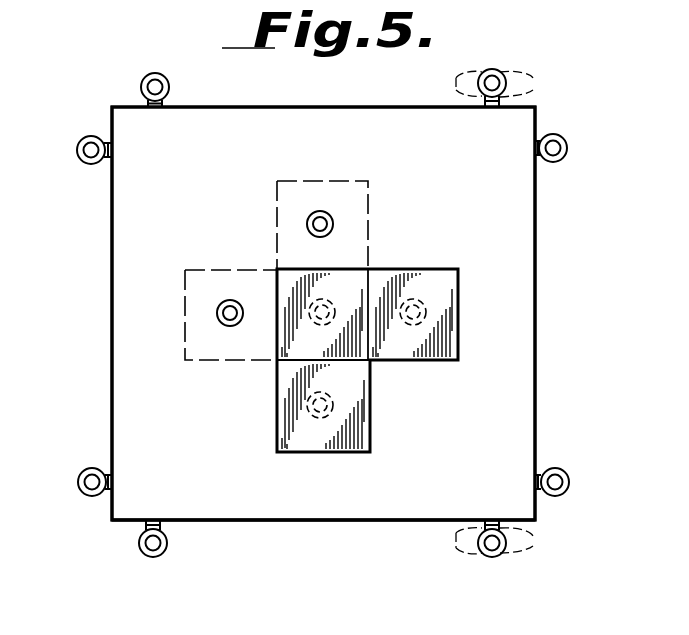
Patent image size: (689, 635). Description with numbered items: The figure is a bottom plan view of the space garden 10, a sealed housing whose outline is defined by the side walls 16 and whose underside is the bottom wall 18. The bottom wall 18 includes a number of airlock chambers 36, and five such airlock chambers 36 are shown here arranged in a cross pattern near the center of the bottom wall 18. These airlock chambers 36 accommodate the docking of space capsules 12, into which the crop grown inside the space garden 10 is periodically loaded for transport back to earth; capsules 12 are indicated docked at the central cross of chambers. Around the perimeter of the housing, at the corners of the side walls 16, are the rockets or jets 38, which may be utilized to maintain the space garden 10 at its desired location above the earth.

The space garden 10 is at (570, 318).
The space capsules 12 is at (250, 372).
The side walls 16 is at (441, 107).
The bottom wall 18 is at (305, 508).
The airlock chambers 36 is at (309, 228).
The rockets or jets 38 is at (141, 90).